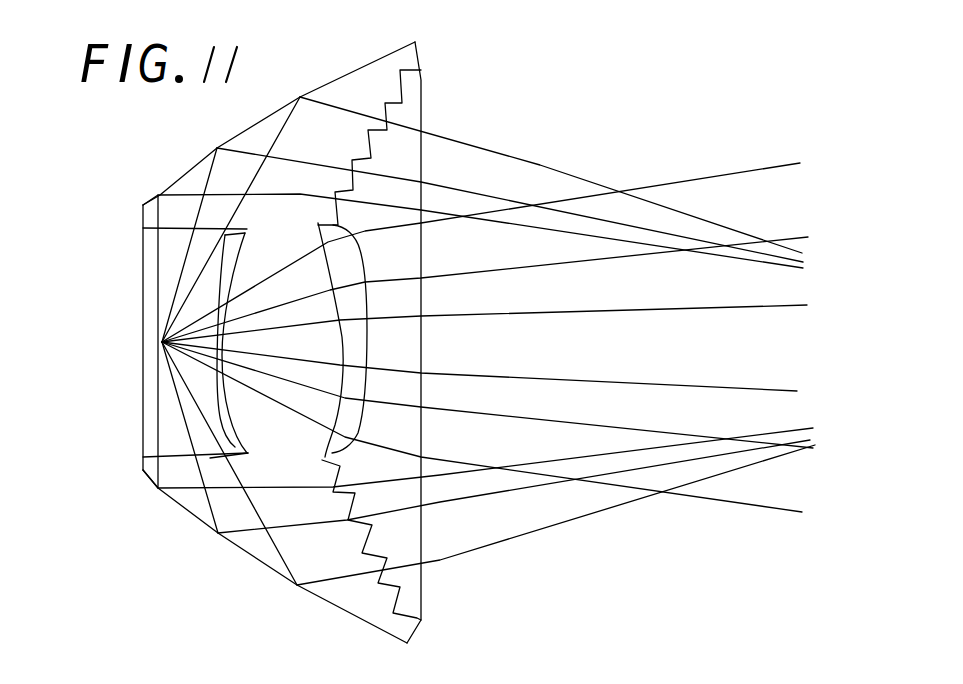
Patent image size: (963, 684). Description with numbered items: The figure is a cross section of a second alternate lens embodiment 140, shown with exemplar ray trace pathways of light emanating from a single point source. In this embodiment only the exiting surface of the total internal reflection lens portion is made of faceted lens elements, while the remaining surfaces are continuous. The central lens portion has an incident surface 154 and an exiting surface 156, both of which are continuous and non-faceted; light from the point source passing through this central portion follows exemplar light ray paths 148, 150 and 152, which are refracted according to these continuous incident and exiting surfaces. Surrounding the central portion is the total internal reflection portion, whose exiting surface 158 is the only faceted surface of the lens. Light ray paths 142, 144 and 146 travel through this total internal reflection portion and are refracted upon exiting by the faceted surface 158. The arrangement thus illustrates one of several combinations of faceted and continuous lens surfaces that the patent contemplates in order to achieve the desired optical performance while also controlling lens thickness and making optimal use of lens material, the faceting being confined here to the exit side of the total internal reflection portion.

The lens embodiment 140 is at (446, 340).
The light ray path 142 is at (183, 193).
The light ray path 144 is at (250, 150).
The light ray path 146 is at (338, 102).
The light ray path 148 is at (519, 377).
The light ray path 150 is at (497, 414).
The light ray path 152 is at (462, 464).
The incident surface 154 is at (218, 410).
The exiting surface 156 is at (362, 328).
The exiting surface 158 is at (394, 345).